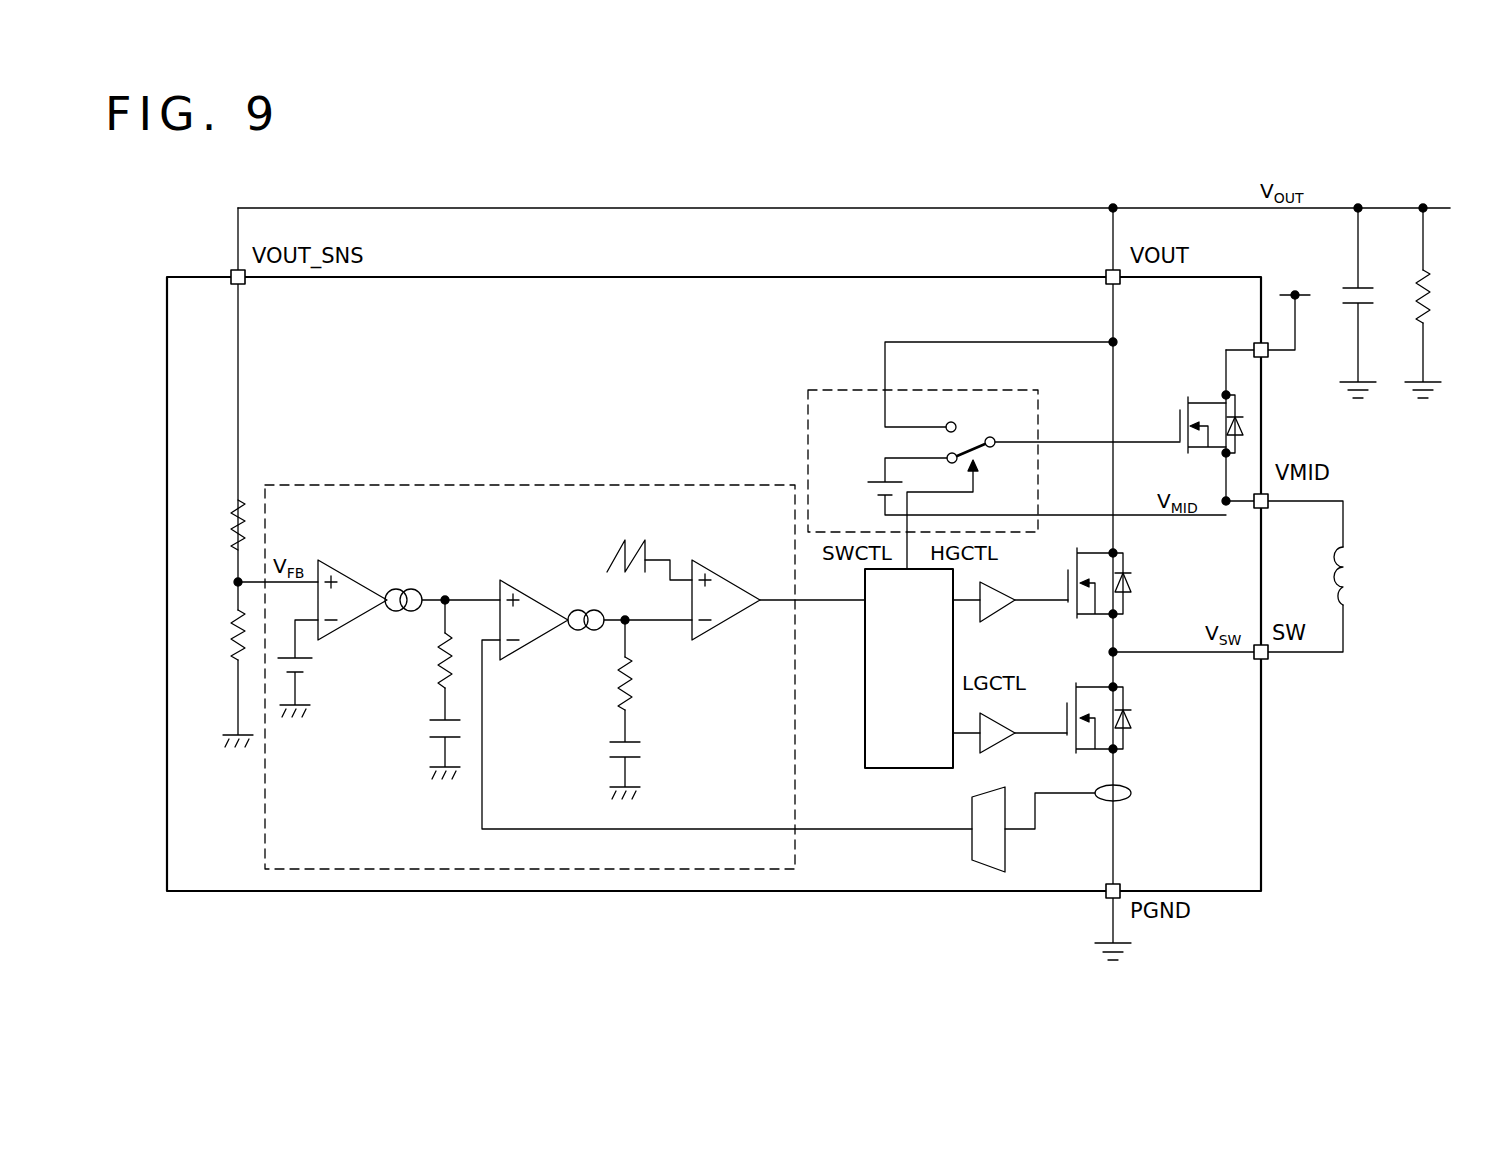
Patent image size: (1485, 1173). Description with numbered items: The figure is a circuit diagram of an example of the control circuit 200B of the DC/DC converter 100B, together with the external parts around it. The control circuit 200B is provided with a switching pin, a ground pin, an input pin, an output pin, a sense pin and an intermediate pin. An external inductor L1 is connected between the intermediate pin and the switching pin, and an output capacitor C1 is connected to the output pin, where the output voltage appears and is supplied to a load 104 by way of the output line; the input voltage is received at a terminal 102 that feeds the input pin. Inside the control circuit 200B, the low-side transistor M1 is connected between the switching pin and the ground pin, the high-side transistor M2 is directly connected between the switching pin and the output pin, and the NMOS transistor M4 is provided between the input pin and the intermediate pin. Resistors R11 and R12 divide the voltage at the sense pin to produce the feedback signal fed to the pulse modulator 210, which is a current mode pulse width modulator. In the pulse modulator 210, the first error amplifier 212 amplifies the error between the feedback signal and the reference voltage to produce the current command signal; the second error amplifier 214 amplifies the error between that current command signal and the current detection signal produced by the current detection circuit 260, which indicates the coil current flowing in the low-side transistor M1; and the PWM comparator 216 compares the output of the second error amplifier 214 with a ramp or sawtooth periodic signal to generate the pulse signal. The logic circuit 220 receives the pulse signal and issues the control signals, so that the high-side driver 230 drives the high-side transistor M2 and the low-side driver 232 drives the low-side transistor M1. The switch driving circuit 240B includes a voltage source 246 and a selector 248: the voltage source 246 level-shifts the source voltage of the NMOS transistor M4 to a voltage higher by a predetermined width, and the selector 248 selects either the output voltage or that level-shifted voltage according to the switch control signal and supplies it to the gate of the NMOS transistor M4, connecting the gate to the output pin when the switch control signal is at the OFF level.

The DC/DC converter 100B is at (1447, 117).
The input terminal / VIN 102 is at (1300, 302).
The load 104 is at (1445, 208).
The control circuit 200B is at (670, 277).
The pulse modulator 210 is at (497, 485).
The first error amplifier 212 is at (343, 571).
The second error amplifier 214 is at (524, 583).
The PWM comparator 216 is at (740, 628).
The logic circuit 220 is at (908, 768).
The high-side driver 230 is at (1002, 620).
The low-side driver 232 is at (1002, 752).
The switch driving circuit 240B is at (801, 412).
The voltage source 246 is at (856, 498).
The selector 248 is at (972, 432).
The current detection circuit 260 is at (1008, 858).
The low-side transistor M1 is at (1135, 738).
The high-side transistor M2 is at (1132, 565).
The NMOS transistor M4 is at (1195, 390).
The inductor L1 is at (1324, 599).
The output capacitor C1 is at (1368, 303).
The resistor R11 is at (212, 525).
The resistor R12 is at (216, 664).